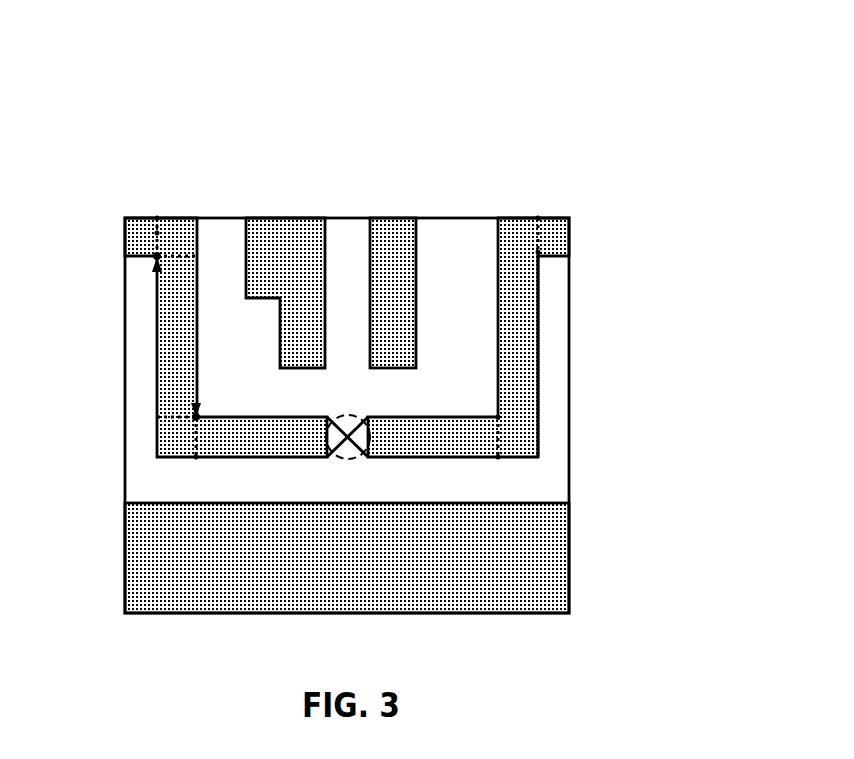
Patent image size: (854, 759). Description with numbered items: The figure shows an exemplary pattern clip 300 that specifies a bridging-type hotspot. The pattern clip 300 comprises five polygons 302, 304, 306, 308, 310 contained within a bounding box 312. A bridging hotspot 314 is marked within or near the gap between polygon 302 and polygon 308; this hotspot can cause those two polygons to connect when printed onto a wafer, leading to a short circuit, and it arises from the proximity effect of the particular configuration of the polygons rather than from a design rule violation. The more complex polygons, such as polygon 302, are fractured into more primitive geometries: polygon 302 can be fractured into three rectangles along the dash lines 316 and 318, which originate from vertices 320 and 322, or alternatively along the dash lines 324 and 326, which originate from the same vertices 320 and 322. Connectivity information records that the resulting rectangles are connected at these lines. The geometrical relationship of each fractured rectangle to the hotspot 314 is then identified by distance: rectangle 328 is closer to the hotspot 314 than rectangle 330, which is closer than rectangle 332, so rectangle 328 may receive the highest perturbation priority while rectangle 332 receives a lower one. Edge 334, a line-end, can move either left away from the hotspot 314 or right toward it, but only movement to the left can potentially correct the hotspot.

The pattern clip 300 is at (374, 318).
The polygon 302 is at (157, 402).
The polygon 304 is at (275, 217).
The polygon 306 is at (388, 217).
The polygon 308 is at (540, 357).
The polygon 310 is at (405, 522).
The bounding box 312 is at (465, 217).
The bridging hotspot 314 is at (340, 418).
The dash line 316 is at (172, 252).
The dash line 318 is at (172, 416).
The vertex 320 is at (157, 268).
The vertex 322 is at (197, 416).
The dash line 324 is at (155, 234).
The dash line 326 is at (197, 437).
The rectangle 328 is at (456, 437).
The rectangle 330 is at (518, 337).
The rectangle 332 is at (557, 247).
The edge 334 is at (327, 437).